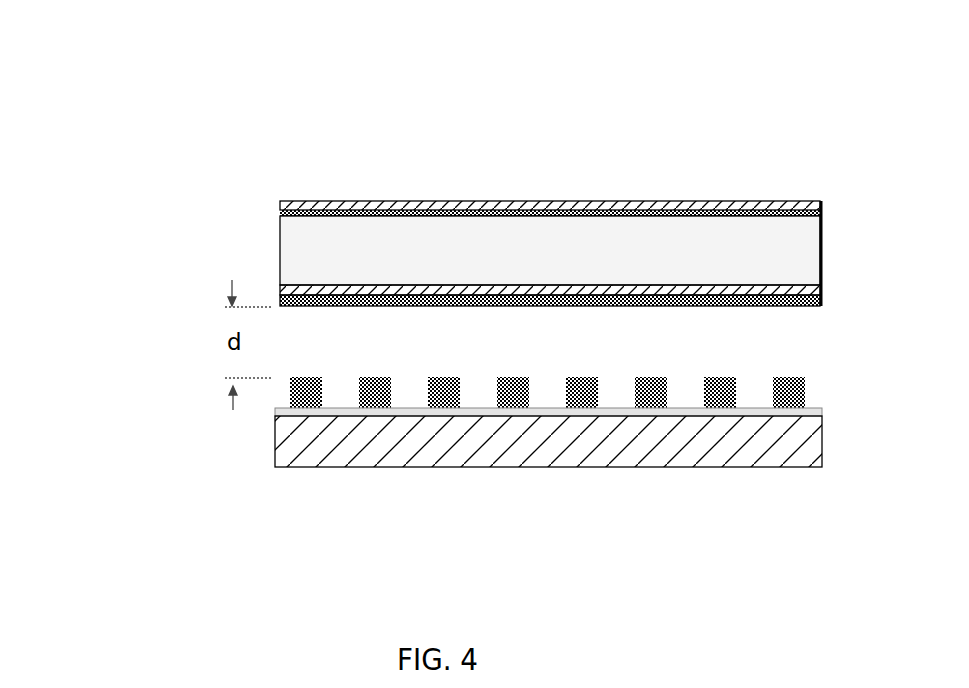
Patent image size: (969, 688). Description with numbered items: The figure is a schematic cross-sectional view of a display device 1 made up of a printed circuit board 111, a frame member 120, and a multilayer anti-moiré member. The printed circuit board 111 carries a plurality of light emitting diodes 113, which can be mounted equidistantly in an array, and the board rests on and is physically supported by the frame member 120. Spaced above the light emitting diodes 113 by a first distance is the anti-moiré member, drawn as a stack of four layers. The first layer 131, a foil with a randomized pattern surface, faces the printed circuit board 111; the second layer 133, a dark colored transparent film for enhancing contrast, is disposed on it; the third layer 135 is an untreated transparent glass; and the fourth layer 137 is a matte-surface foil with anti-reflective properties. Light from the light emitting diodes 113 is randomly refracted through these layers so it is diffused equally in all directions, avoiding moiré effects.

The display device 1 is at (544, 166).
The printed circuit board 111 is at (480, 415).
The light emitting diodes 113 is at (290, 396).
The frame member 120 is at (653, 467).
The first layer 131 is at (281, 298).
The second layer 133 is at (281, 287).
The third layer 135 is at (290, 243).
The fourth layer 137 is at (281, 207).